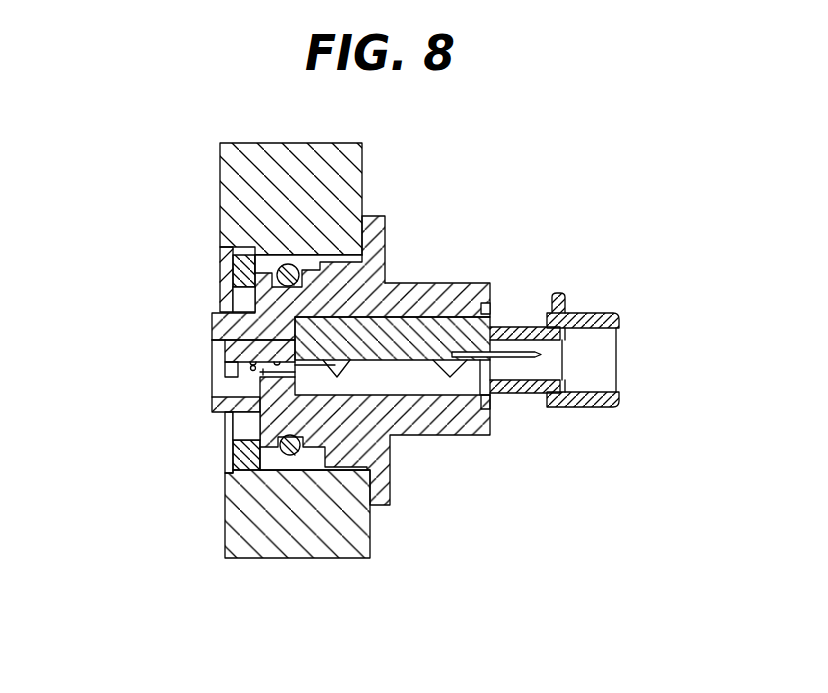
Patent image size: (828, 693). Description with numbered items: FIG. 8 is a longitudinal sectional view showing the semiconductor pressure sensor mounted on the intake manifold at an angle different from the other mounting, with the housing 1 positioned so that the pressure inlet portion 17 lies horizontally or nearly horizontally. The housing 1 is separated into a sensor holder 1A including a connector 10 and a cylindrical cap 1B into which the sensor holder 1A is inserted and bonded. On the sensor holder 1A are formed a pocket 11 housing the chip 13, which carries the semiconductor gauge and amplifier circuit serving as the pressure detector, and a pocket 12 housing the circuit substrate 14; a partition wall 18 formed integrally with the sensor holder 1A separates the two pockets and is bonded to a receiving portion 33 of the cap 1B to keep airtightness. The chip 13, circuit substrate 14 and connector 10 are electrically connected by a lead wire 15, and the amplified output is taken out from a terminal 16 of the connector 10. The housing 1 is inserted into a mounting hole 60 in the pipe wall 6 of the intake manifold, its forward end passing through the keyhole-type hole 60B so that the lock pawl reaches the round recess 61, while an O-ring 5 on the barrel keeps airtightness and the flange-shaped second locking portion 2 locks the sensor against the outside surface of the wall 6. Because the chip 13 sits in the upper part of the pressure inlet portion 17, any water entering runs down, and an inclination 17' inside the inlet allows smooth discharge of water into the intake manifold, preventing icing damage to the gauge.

The housing 1 is at (462, 203).
The sensor holder 1A is at (517, 355).
The cap 1B is at (410, 283).
The second locking portion 2 is at (388, 505).
The O-ring 5 is at (277, 263).
The pipe wall of the intake manifold 6 is at (343, 172).
The connector 10 is at (590, 400).
The pocket 11 is at (263, 372).
The pocket 12 is at (398, 385).
The chip 13 is at (238, 376).
The circuit substrate 14 is at (398, 380).
The lead wire 15 is at (492, 396).
The terminal 16 is at (495, 340).
The pressure inlet portion 17 is at (199, 368).
The inclination 17' is at (186, 408).
The partition wall 18 is at (298, 373).
The receiving portion 33 is at (292, 462).
The mounting hole 60 is at (320, 253).
The hole 60B is at (242, 298).
The round recess 61 is at (240, 278).